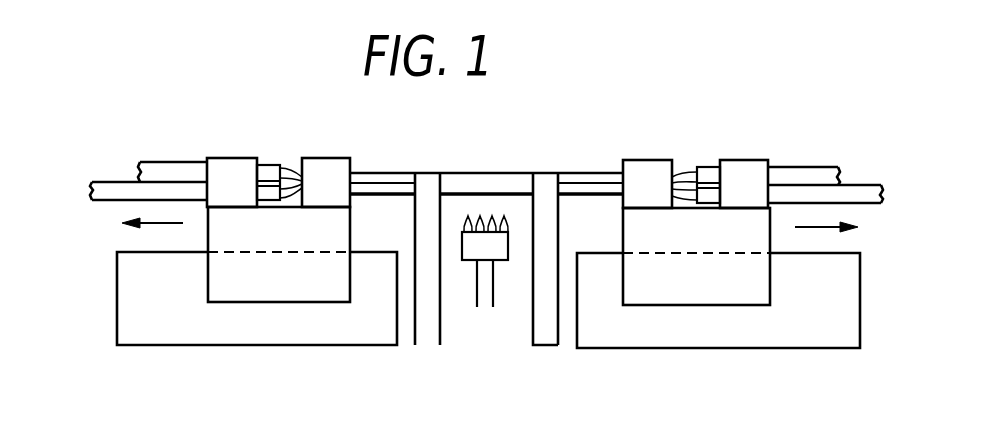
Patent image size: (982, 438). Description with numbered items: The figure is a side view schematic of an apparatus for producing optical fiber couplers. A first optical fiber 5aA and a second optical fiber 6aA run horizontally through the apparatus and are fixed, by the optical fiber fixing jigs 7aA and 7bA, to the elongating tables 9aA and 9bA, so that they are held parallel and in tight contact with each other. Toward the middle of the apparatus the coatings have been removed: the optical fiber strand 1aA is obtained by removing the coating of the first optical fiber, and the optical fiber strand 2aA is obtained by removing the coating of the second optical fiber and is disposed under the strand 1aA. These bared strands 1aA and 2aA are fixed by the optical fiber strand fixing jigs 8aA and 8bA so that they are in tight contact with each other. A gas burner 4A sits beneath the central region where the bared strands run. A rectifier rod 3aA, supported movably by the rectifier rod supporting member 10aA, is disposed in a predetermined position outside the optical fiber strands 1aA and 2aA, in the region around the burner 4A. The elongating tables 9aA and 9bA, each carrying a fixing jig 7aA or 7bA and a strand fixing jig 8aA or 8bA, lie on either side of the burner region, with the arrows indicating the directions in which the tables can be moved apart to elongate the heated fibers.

The optical fiber strand 1aA is at (377, 178).
The optical fiber strand 2aA is at (402, 188).
The rectifier rod 3aA is at (495, 183).
The gas burner 4A is at (505, 242).
The optical fiber 5aA is at (162, 170).
The optical fiber 6aA is at (110, 188).
The optical fiber fixing jig 7aA is at (228, 170).
The optical fiber fixing jig 7bA is at (737, 170).
The optical fiber strand fixing jig 8aA is at (322, 172).
The optical fiber strand fixing jig 8bA is at (645, 170).
The elongating table 9aA is at (273, 283).
The elongating table 9bA is at (723, 285).
The rectifier rod supporting member 10aA is at (430, 318).